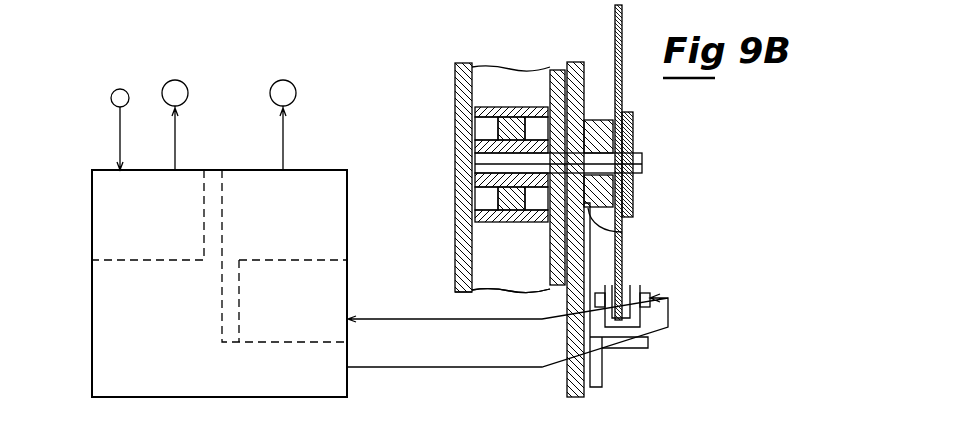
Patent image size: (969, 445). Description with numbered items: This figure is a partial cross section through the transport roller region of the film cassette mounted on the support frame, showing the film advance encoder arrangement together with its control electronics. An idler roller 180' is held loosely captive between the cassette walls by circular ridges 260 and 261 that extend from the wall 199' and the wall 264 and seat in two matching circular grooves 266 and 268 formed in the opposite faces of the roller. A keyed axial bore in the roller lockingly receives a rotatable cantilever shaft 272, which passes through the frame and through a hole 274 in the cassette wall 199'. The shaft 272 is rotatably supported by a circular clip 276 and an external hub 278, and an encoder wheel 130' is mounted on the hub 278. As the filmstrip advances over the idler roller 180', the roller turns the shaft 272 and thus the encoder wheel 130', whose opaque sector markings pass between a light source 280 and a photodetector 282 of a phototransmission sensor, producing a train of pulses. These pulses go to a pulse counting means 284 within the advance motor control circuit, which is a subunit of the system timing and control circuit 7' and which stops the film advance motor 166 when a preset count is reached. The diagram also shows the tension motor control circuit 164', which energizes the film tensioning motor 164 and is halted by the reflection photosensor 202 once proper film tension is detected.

The system timing and control circuit 7' is at (219, 283).
The tension motor control circuit 164' is at (148, 215).
The pulse counting means 284 is at (293, 340).
The reflection photosensor 202 is at (114, 91).
The film tensioning motor 164 is at (198, 113).
The film advance motor 166 is at (293, 82).
The cassette wall 264 is at (462, 63).
The circular ridge 260 is at (470, 200).
The cassette wall 199' is at (549, 145).
The idler roller 180' is at (511, 278).
The circular groove 266 is at (505, 118).
The circular groove 268 is at (518, 128).
The circular ridge 261 is at (503, 224).
The cantilever shaft 272 is at (645, 152).
The hole 274 is at (564, 118).
The encoder wheel 130' is at (650, 162).
The external hub 278 is at (626, 222).
The circular clip 276 is at (608, 232).
The photodetector 282 is at (596, 293).
The light source 280 is at (660, 296).